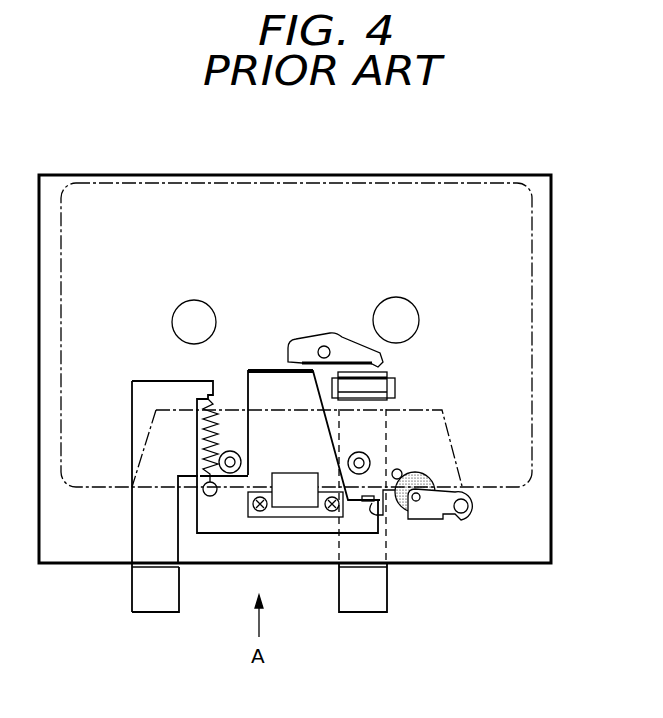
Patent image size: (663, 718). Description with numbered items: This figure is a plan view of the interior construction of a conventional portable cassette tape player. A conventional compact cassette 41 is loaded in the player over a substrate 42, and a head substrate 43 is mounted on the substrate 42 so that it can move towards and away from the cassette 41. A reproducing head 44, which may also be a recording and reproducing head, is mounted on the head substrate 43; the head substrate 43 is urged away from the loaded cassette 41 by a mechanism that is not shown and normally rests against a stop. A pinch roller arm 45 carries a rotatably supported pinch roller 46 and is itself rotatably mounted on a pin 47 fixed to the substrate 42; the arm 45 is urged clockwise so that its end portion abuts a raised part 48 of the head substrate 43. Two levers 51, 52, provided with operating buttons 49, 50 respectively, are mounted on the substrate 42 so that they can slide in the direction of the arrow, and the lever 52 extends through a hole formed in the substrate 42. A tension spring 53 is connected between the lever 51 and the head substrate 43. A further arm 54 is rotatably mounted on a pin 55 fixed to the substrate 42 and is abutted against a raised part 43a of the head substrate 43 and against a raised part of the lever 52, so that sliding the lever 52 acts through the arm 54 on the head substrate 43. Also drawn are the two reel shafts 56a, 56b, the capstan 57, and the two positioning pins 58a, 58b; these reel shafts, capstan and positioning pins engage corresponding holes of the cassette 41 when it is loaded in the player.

The compact cassette 41 is at (480, 185).
The substrate 42 is at (551, 525).
The head substrate 43 is at (216, 528).
The raised part 43a is at (263, 372).
The reproducing head 44 is at (294, 518).
The pinch roller arm 45 is at (433, 512).
The pinch roller 46 is at (432, 478).
The pin 47 is at (466, 512).
The raised part 48 is at (378, 512).
The operating button 49 is at (148, 600).
The operating button 50 is at (368, 612).
The lever 51 is at (136, 525).
The lever 52 is at (375, 548).
The tension spring 53 is at (222, 418).
The arm 54 is at (328, 330).
The pin 55 is at (318, 350).
The reel shaft 56a is at (185, 300).
The reel shaft 56b is at (404, 302).
The capstan 57 is at (398, 468).
The positioning pin 58a is at (230, 451).
The positioning pin 58b is at (348, 463).